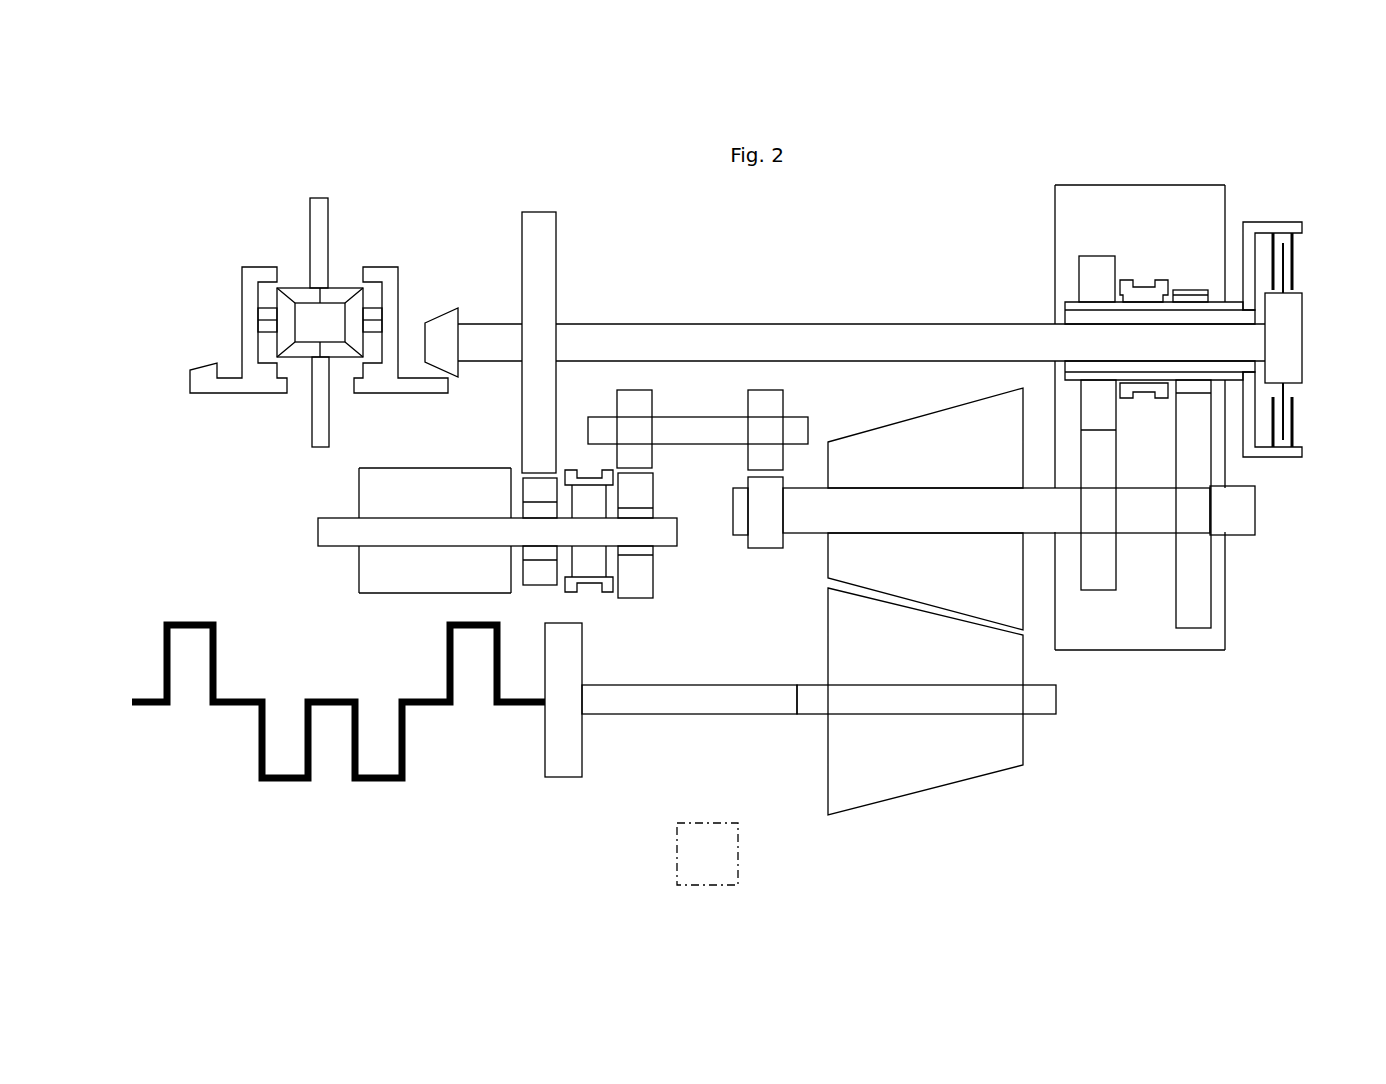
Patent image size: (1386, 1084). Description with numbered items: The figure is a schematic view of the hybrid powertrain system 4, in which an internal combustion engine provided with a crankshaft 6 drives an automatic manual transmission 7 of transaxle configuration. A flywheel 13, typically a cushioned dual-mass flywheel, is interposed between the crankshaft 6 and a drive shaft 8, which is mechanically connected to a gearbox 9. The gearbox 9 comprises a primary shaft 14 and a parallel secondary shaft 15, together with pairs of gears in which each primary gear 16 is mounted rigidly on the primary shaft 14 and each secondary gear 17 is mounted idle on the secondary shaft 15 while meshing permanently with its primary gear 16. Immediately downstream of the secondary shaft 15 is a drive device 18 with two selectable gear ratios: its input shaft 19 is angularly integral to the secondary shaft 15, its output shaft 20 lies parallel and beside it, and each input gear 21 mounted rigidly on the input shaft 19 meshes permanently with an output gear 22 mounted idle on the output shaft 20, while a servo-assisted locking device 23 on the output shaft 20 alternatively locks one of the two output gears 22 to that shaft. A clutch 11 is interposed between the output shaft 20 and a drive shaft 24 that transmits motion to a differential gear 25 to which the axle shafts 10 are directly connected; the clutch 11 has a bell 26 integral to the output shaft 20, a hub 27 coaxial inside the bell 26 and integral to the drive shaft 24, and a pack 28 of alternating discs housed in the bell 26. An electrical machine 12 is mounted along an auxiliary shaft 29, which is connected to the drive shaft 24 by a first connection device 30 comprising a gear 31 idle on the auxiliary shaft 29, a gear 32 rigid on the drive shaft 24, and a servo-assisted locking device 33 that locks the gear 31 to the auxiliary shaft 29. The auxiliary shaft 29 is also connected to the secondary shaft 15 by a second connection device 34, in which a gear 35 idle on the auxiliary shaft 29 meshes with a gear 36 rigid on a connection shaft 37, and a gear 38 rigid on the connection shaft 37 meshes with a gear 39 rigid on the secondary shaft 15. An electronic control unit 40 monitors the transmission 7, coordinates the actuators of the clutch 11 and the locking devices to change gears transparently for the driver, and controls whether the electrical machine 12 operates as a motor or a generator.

The powertrain system 4 is at (338, 779).
The crankshaft 6 is at (155, 703).
The automatic manual transmission 7 is at (861, 248).
The drive shaft 8 is at (685, 705).
The gearbox 9 is at (928, 647).
The axle shafts 10 is at (320, 220).
The clutch 11 is at (1300, 324).
The electrical machine 12 is at (430, 492).
The flywheel 13 is at (558, 767).
The primary shaft 14 is at (1040, 708).
The secondary shaft 15 is at (798, 522).
The primary gear 16 is at (988, 762).
The secondary gear 17 is at (893, 445).
The drive device 18 is at (1127, 467).
The input shaft 19 is at (1246, 530).
The output shaft 20 is at (1067, 305).
The input gear 21 is at (1097, 573).
The output gear 22 is at (1097, 272).
The servo-assisted locking device 23 is at (1150, 288).
The drive shaft 24 is at (780, 342).
The differential gear 25 is at (319, 294).
The bell 26 is at (1280, 453).
The hub 27 is at (1288, 338).
The pack of discs 28 is at (1292, 417).
The auxiliary shaft 29 is at (335, 533).
The connection device 30 is at (650, 407).
The gear 31 is at (538, 573).
The gear 32 is at (538, 223).
The servo-assisted locking device 33 is at (592, 565).
The connection device 34 is at (702, 368).
The gear 35 is at (637, 578).
The gear 36 is at (632, 400).
The connection shaft 37 is at (703, 433).
The gear 38 is at (772, 402).
The gear 39 is at (763, 538).
The electronic control unit 40 is at (707, 854).